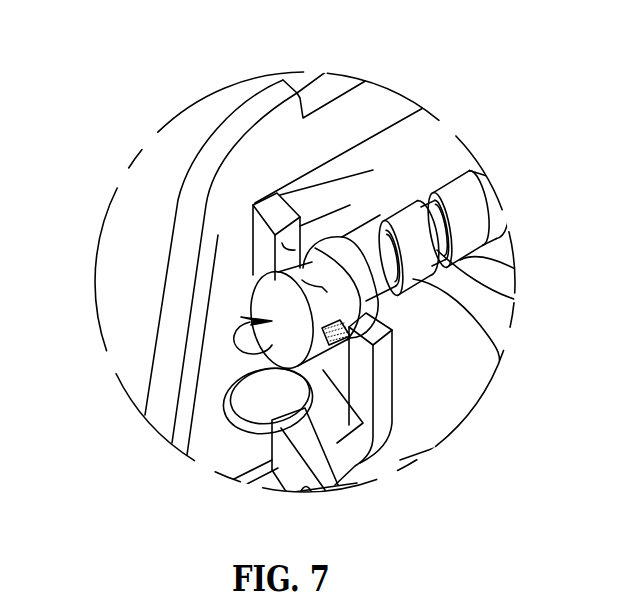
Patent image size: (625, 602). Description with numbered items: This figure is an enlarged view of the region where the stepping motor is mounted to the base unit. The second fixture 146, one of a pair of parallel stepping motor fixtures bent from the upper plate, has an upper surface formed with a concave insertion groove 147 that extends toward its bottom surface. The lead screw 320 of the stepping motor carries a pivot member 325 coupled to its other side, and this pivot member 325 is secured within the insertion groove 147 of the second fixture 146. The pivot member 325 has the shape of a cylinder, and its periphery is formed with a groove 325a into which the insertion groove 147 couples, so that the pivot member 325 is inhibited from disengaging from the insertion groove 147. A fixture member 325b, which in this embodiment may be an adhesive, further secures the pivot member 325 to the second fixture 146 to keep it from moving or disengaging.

The second fixture 146 is at (253, 242).
The insertion groove 147 is at (300, 217).
The lead screw 320 is at (500, 357).
The pivot member 325 is at (248, 322).
The groove 325a is at (285, 280).
The fixture member 325b is at (360, 338).